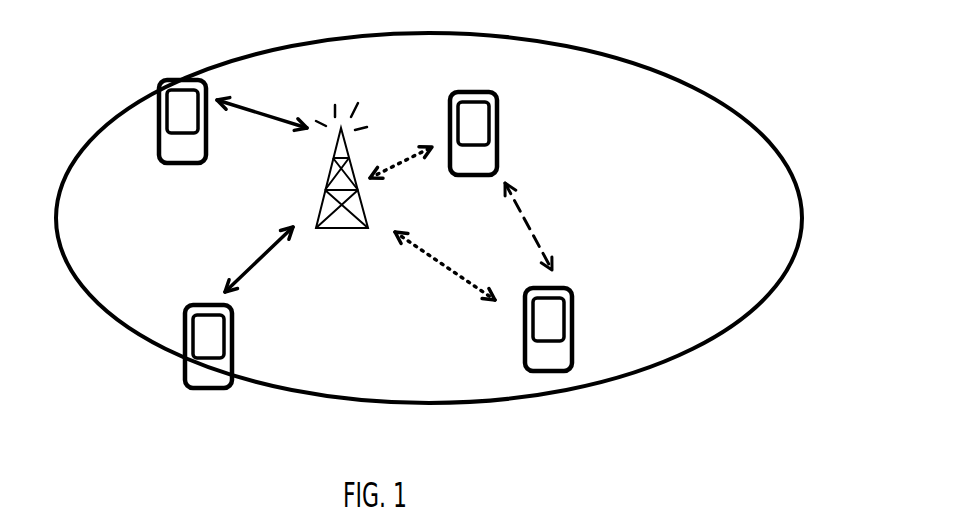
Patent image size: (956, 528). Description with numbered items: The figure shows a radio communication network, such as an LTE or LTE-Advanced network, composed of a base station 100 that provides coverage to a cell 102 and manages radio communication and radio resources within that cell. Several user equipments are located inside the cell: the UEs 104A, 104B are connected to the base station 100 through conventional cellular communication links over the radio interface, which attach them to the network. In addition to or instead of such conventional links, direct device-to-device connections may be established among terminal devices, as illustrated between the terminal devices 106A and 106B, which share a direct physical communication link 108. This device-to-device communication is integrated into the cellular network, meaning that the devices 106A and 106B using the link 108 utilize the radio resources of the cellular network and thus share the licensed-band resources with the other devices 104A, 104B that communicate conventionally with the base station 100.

The base station 100 is at (331, 163).
The cell 102 is at (712, 96).
The user equipment 104A is at (185, 333).
The user equipment 104B is at (158, 104).
The terminal device 106A is at (497, 97).
The terminal device 106B is at (573, 295).
The direct physical communication link 108 is at (523, 215).